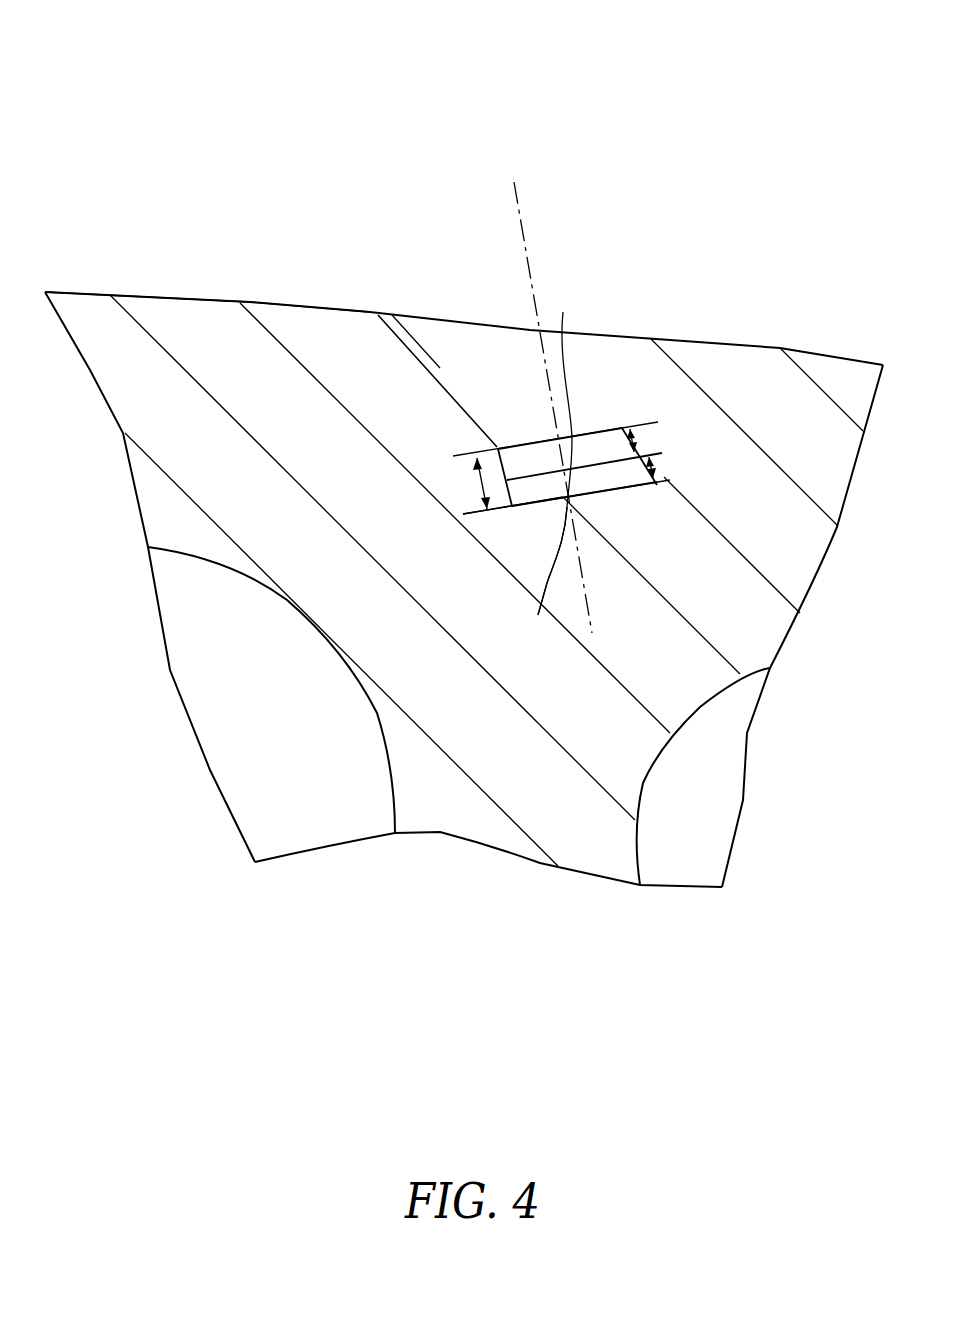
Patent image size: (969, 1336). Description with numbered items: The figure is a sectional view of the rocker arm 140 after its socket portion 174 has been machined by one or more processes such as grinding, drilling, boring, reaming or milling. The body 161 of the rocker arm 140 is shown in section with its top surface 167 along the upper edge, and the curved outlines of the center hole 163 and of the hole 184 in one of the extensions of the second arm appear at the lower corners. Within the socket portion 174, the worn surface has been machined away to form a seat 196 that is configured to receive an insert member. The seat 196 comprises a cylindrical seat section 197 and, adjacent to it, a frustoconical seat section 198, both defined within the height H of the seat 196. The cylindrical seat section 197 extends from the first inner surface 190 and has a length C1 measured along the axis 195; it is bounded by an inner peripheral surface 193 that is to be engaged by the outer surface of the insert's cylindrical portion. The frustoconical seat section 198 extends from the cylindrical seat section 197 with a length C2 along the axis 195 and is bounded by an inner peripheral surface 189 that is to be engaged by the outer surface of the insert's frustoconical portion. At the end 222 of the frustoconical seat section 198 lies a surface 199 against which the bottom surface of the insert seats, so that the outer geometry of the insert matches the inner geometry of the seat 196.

The rocker arm 140 is at (462, 90).
The body 161 is at (478, 720).
The center hole 163 is at (283, 597).
The top surface 167 is at (274, 302).
The socket portion 174 is at (598, 303).
The hole 184 is at (700, 707).
The inner peripheral surface 189 is at (612, 475).
The first inner surface 190 is at (428, 360).
The inner peripheral surface 193 is at (594, 436).
The axis 195 is at (520, 213).
The seat 196 is at (497, 512).
The cylindrical seat section 197 is at (493, 467).
The frustoconical seat section 198 is at (535, 493).
The surface 199 is at (561, 449).
The end 222 is at (543, 576).
The height H is at (478, 477).
The length C1 is at (638, 437).
The length C2 is at (656, 468).